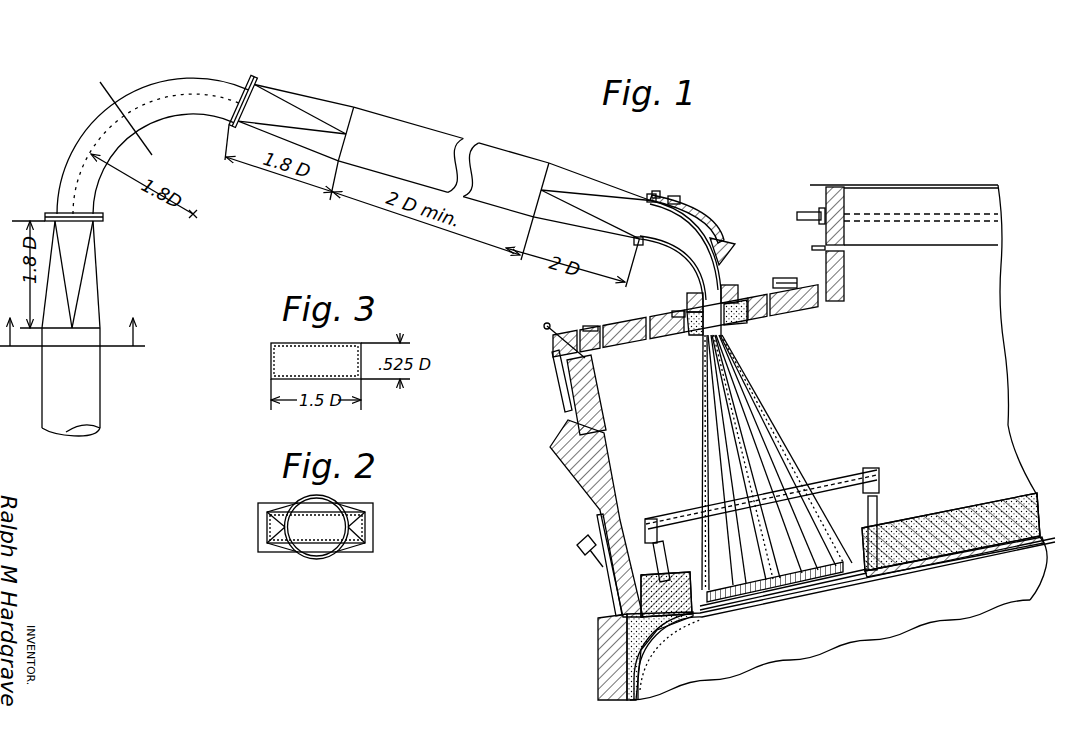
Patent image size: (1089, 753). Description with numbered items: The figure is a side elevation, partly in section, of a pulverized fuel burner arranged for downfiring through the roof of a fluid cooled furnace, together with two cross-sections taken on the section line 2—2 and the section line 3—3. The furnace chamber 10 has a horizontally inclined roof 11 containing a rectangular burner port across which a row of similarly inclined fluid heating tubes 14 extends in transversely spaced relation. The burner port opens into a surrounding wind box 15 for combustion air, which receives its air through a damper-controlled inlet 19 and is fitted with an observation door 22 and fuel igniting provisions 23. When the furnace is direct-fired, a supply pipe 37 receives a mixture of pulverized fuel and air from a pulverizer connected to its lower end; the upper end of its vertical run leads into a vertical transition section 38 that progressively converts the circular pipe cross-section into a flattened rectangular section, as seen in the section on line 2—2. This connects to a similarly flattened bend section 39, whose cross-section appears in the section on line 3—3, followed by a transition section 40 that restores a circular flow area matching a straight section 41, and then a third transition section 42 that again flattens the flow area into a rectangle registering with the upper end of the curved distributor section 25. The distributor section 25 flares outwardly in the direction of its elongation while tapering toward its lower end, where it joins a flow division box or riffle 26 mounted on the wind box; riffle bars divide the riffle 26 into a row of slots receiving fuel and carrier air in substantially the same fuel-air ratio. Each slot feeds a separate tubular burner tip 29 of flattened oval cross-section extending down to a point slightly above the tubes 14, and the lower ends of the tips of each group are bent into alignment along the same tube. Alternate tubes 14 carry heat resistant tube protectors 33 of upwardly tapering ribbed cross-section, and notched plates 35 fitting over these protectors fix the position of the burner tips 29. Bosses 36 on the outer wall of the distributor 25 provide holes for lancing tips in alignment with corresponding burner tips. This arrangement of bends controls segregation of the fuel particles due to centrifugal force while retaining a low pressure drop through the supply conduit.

In FIG. 1, the section line 2— 2 is at (72, 314).
In FIG. 1, the section line 3— 3 is at (125, 120).
In FIG. 1, the furnace chamber 10 is at (830, 640).
In FIG. 1, the horizontally inclined roof 11 is at (920, 525).
In FIG. 1, the fluid heating tubes 14 is at (727, 617).
In FIG. 1, the wind box 15 is at (580, 387).
In FIG. 1, the damper-controlled inlet 19 is at (898, 186).
In FIG. 1, the observation door 22 is at (558, 466).
In FIG. 1, the fuel igniting provisions 23 is at (590, 559).
In FIG. 1, the curved distributor section 25 is at (682, 257).
In FIG. 1, the flow division box or riffle 26 is at (737, 290).
In FIG. 1, the burner tips 29 is at (730, 455).
In FIG. 1, the heat resistant tube protectors 33 is at (832, 570).
In FIG. 1, the notched plates 35 is at (843, 547).
In FIG. 1, the bosses 36 is at (692, 213).
In FIG. 1, the supply pipe 37 is at (98, 401).
In FIG. 2, the supply pipe 37 is at (313, 556).
In FIG. 1, the vertical transition section 38 is at (98, 268).
In FIG. 2, the vertical transition section 38 is at (352, 527).
In FIG. 1, the flattened bend section 39 is at (84, 131).
In FIG. 3, the flattened bend section 39 is at (270, 360).
In FIG. 1, the transition section 40 is at (290, 93).
In FIG. 1, the straight section 41 is at (415, 121).
In FIG. 1, the third transition section 42 is at (582, 172).